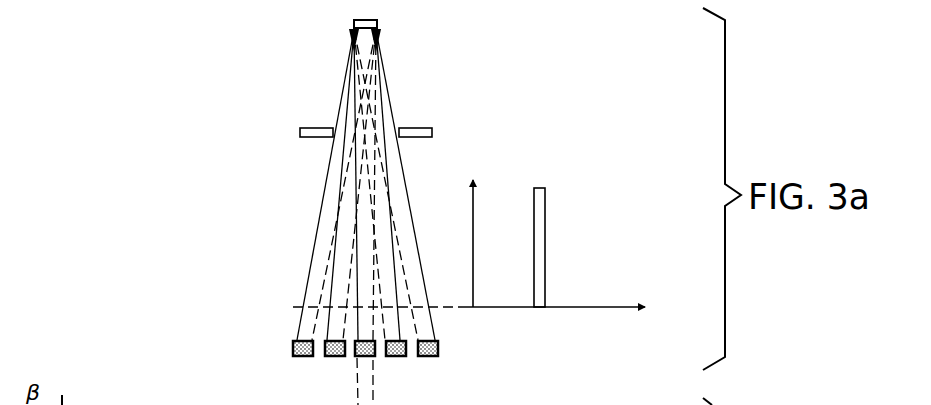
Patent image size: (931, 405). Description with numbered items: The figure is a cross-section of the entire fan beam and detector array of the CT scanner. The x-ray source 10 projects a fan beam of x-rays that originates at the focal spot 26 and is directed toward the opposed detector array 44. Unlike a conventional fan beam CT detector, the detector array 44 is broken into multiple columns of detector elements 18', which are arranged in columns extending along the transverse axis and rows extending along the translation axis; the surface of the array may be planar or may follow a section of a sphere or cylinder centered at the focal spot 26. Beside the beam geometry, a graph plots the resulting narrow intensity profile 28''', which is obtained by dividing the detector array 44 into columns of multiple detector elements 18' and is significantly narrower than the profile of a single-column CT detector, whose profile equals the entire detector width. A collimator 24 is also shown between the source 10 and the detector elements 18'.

The x-ray source 10 is at (392, 10).
The focal spot 26 is at (353, 23).
The collimator 24 is at (416, 128).
The detector elements 18' is at (342, 363).
The detector array 44 is at (481, 339).
The narrow intensity profile 28''' is at (575, 237).